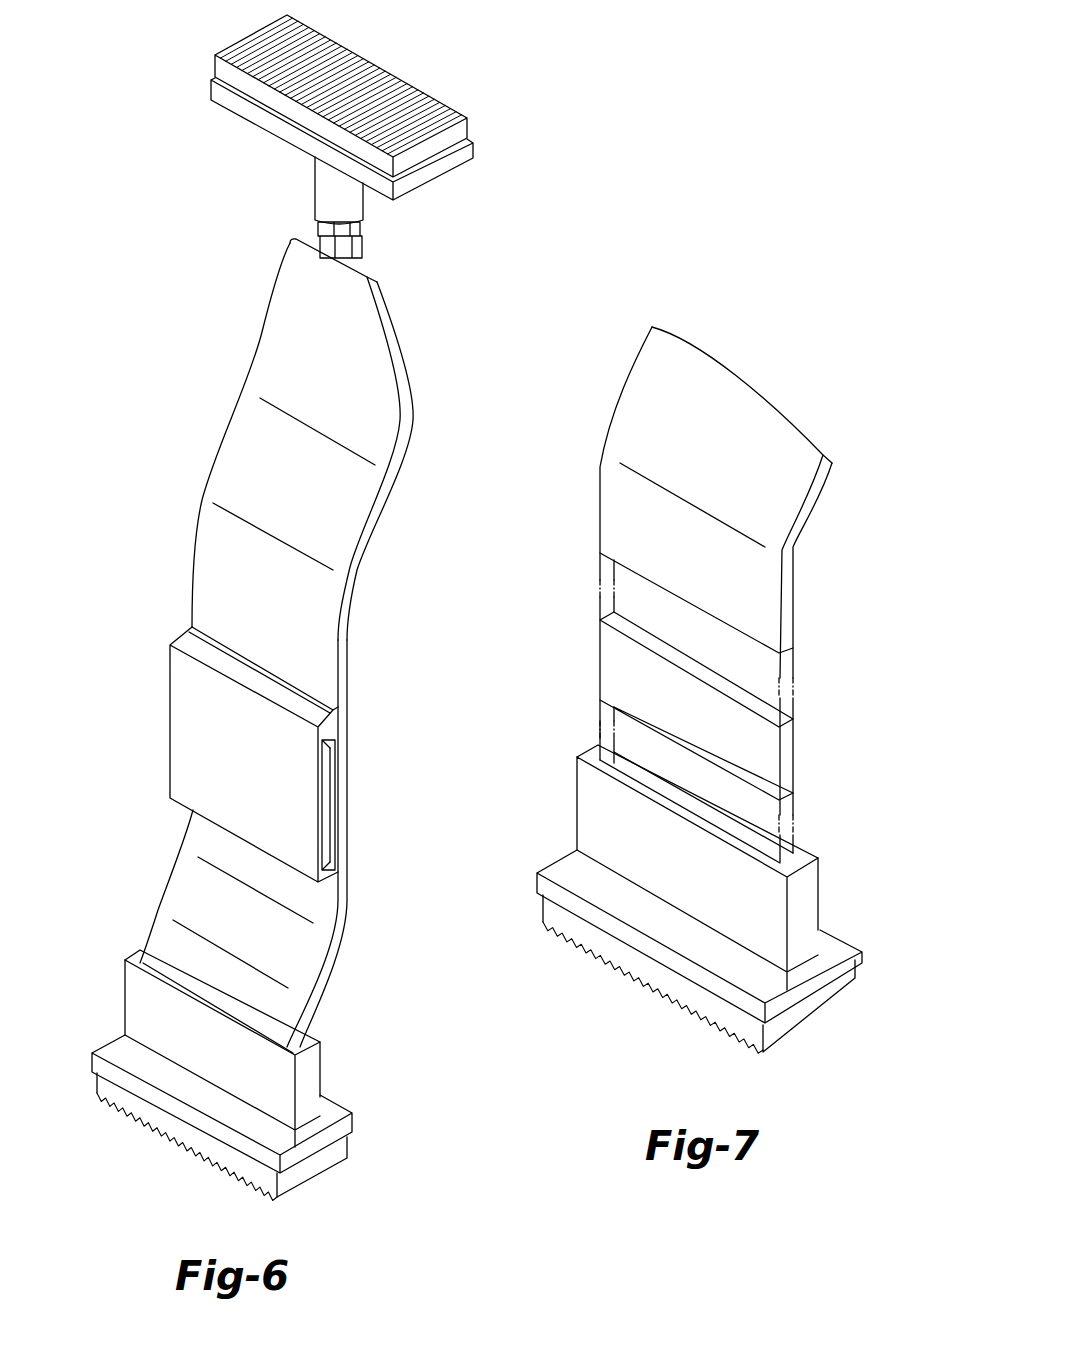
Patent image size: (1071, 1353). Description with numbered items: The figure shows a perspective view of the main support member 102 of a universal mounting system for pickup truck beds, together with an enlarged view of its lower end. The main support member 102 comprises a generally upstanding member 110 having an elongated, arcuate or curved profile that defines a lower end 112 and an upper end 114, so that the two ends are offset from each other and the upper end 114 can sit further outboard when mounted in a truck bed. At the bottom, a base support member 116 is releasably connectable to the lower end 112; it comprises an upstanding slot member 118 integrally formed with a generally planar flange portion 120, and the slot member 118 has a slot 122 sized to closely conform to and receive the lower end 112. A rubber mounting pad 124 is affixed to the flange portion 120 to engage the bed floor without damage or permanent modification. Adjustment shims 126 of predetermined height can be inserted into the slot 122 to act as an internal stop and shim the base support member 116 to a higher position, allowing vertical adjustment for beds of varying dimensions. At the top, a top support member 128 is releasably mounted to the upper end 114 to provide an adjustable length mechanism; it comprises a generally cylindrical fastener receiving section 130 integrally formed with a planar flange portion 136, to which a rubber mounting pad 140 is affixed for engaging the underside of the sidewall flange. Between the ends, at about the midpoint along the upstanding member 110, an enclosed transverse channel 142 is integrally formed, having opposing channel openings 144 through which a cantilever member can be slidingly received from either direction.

In FIG. 6, the main support member 102 is at (302, 643).
In FIG. 7, the main support member 102 is at (730, 579).
In FIG. 6, the generally upstanding member 110 is at (190, 550).
In FIG. 6, the lower end 112 is at (318, 993).
In FIG. 7, the lower end 112 is at (797, 600).
In FIG. 6, the upper end 114 is at (387, 287).
In FIG. 6, the base support member 116 is at (242, 1037).
In FIG. 7, the base support member 116 is at (717, 863).
In FIG. 6, the upstanding slot member 118 is at (123, 1000).
In FIG. 7, the upstanding slot member 118 is at (573, 797).
In FIG. 6, the flange portion 120 is at (92, 1050).
In FIG. 7, the flange portion 120 is at (537, 868).
In FIG. 7, the slot 122 is at (793, 850).
In FIG. 6, the mounting pad 124 is at (97, 1082).
In FIG. 7, the mounting pad 124 is at (543, 913).
In FIG. 7, the adjustment shims 126 is at (797, 751).
In FIG. 6, the top support member 128 is at (306, 186).
In FIG. 6, the fastener receiving section 130 is at (347, 213).
In FIG. 6, the flange portion 136 is at (475, 152).
In FIG. 6, the mounting pad 140 is at (468, 130).
In FIG. 6, the transverse channel 142 is at (337, 765).
In FIG. 6, the channel opening 144 is at (330, 838).